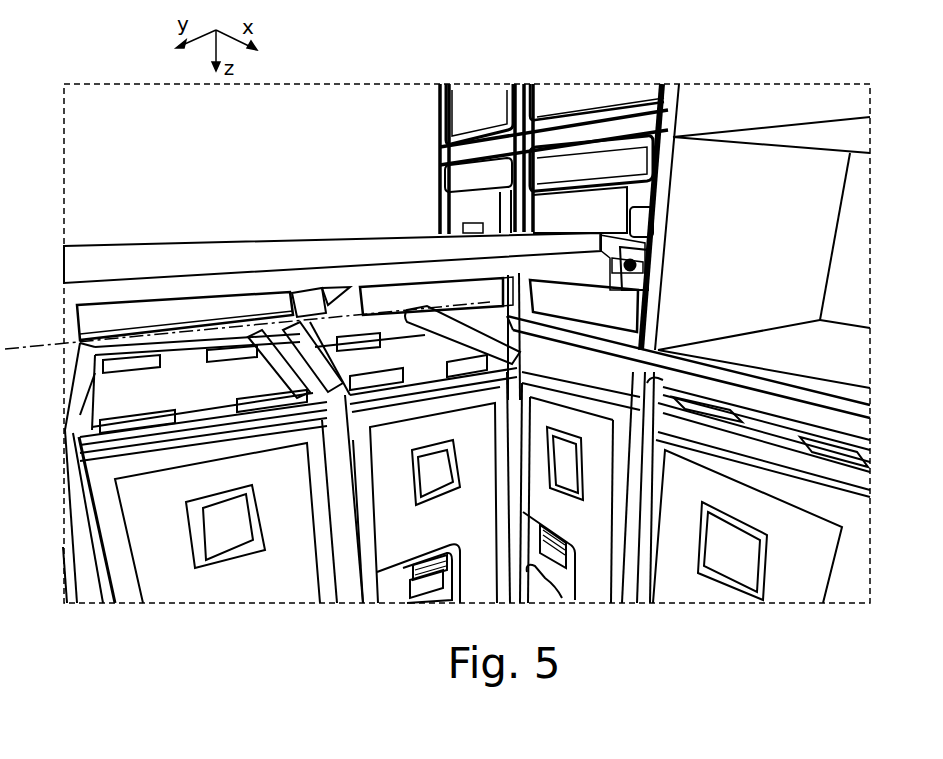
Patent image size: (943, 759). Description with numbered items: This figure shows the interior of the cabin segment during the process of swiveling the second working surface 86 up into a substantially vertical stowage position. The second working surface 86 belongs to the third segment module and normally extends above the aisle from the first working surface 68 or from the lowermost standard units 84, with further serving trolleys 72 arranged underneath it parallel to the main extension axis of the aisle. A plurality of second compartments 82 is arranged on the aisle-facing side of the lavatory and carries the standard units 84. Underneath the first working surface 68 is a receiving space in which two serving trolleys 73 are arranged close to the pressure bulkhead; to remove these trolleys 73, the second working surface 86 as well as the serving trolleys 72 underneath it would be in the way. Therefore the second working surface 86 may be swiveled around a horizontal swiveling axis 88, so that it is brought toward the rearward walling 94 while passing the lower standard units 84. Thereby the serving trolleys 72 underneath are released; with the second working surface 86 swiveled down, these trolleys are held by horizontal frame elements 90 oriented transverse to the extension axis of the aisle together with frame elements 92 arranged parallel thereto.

The first working surface 68 is at (805, 369).
The serving trolleys 72 is at (274, 527).
The serving trolleys 73 is at (553, 326).
The second compartments 82 is at (668, 110).
The standard unit 84 is at (500, 97).
The second working surface 86 is at (222, 228).
The horizontal swiveling axis 88 is at (20, 346).
The horizontal frame elements 90 is at (134, 318).
The bracket 92 is at (308, 306).
The rearward walling 94 is at (297, 144).